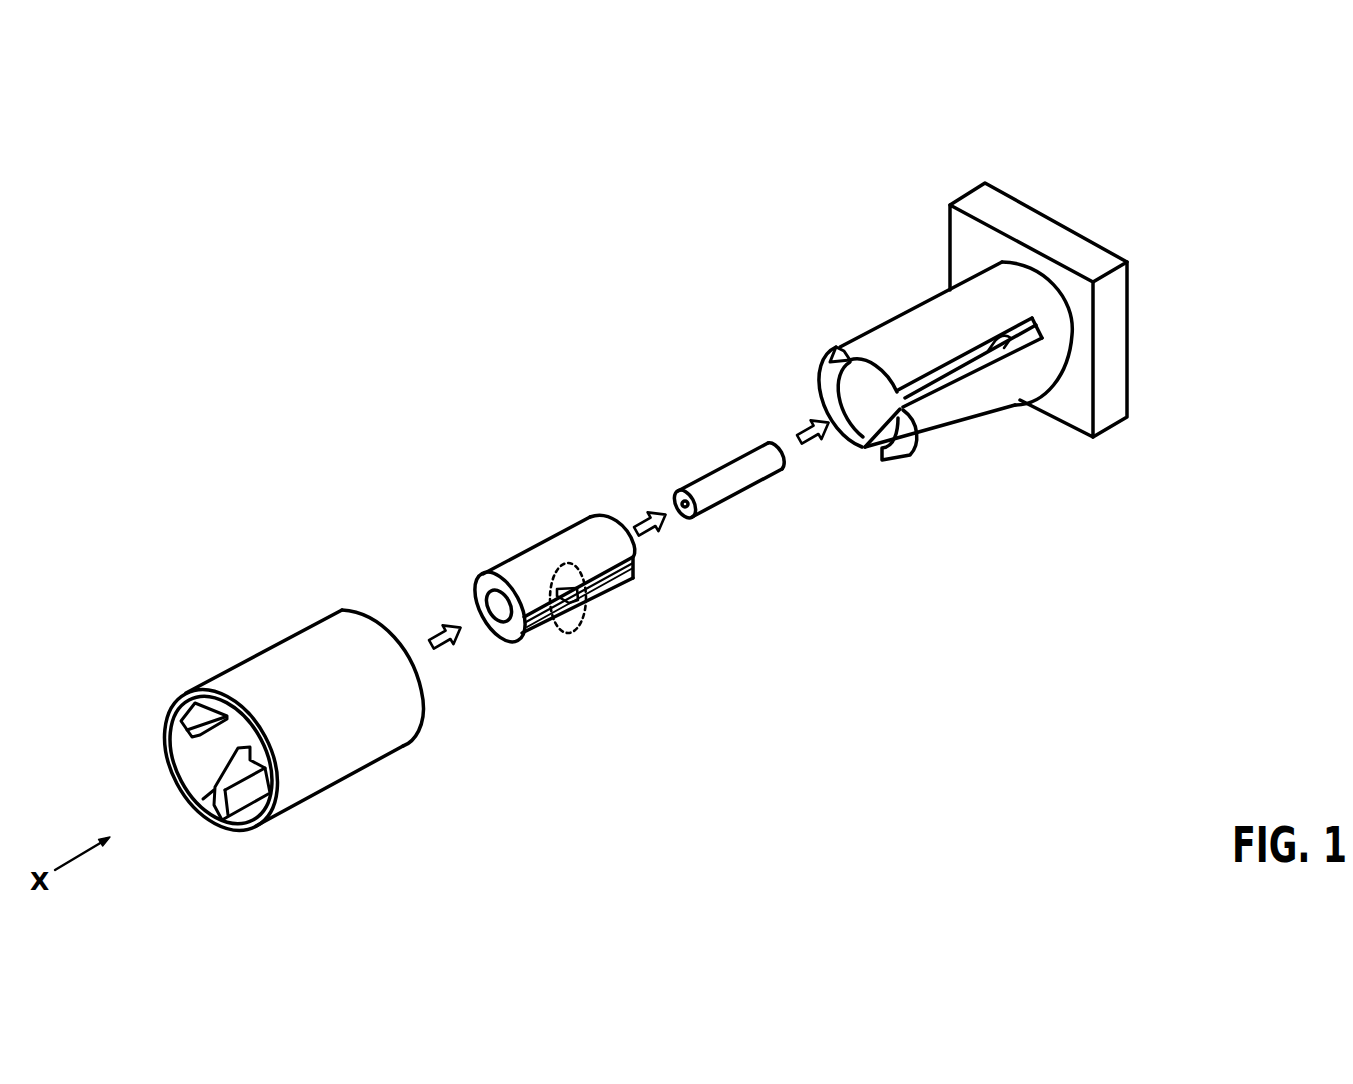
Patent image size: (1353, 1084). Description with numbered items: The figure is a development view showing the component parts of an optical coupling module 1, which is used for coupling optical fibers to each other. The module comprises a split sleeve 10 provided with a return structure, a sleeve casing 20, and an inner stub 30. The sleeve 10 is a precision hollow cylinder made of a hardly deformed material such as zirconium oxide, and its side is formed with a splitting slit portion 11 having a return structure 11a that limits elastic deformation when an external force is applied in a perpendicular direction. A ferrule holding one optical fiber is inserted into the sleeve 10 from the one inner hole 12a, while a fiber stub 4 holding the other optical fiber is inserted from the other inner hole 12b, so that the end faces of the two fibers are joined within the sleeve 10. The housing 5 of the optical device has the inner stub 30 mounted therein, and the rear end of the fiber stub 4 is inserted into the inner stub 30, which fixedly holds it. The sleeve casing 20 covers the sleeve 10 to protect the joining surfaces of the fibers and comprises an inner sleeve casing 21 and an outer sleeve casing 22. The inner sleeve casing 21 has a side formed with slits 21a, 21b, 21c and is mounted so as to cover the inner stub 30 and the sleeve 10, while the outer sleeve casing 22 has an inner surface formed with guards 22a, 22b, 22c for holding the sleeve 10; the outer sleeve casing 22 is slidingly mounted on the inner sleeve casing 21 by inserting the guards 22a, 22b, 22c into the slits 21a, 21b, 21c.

The optical coupling module 1 is at (318, 258).
The fiber stub 4 is at (720, 505).
The housing 5 is at (1055, 220).
The split sleeve 10 is at (498, 577).
The splitting slit portion 11 is at (590, 568).
The return structure 11a is at (570, 632).
The one inner hole 12a is at (490, 611).
The other inner hole 12b is at (634, 546).
The sleeve casing 20 is at (414, 772).
The inner sleeve casing 21 is at (878, 318).
The slit 21a is at (932, 402).
The slit 21b is at (864, 466).
The slit 21c is at (817, 339).
The outer sleeve casing 22 is at (292, 632).
The guard 22a is at (270, 817).
The guard 22b is at (203, 799).
The guard 22c is at (200, 703).
The inner stub 30 is at (983, 352).